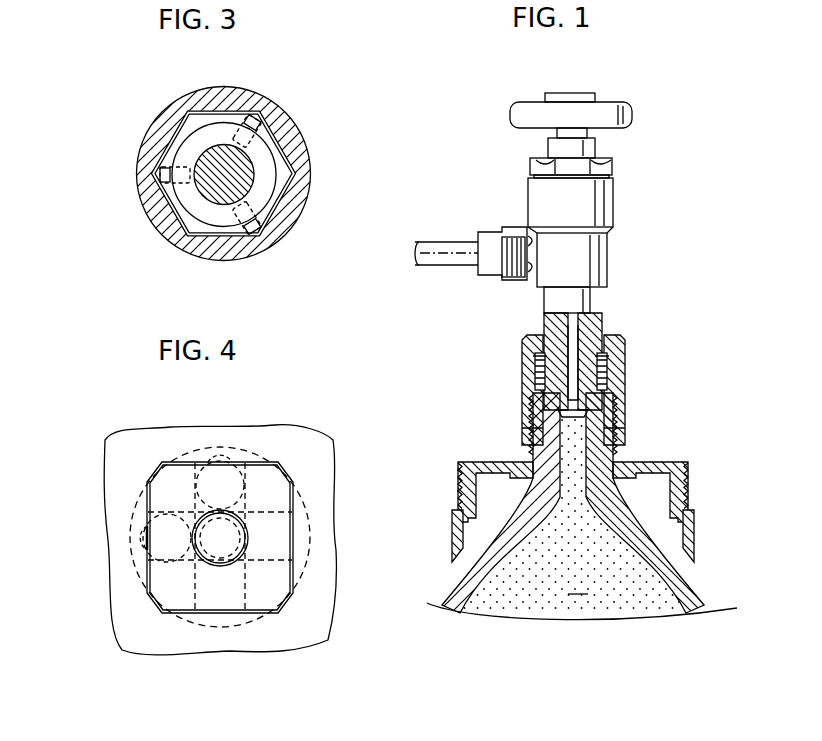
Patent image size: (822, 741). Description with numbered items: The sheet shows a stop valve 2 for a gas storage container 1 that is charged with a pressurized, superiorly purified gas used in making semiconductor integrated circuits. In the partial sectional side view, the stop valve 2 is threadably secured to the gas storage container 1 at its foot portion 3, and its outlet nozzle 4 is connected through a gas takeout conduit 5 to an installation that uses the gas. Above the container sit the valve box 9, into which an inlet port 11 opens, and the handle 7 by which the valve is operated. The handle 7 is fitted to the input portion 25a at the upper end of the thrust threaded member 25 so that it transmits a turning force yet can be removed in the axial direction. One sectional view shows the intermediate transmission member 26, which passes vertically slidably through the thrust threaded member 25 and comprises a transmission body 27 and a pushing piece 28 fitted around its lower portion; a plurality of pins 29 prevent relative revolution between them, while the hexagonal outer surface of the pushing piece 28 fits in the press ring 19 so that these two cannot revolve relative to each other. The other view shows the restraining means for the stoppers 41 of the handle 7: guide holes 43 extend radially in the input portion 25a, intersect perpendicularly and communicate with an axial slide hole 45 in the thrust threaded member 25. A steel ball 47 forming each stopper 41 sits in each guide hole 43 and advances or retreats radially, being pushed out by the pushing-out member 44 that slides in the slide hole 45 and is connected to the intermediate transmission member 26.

In FIG. 1, the gas storage container 1 is at (701, 572).
In FIG. 1, the stop valve 2 is at (616, 187).
In FIG. 1, the foot portion 3 is at (593, 352).
In FIG. 1, the outlet nozzle 4 is at (505, 238).
In FIG. 1, the gas takeout conduit 5 is at (437, 243).
In FIG. 4, the handle 7 is at (120, 463).
In FIG. 1, the handle 7 is at (617, 103).
In FIG. 1, the valve box 9 is at (604, 241).
In FIG. 1, the inlet port 11 is at (573, 323).
In FIG. 3, the press ring 19 is at (163, 118).
In FIG. 3, the intermediate transmission member 26 is at (104, 215).
In FIG. 3, the transmission body 27 is at (187, 200).
In FIG. 3, the pushing piece 28 is at (168, 240).
In FIG. 3, the pins 29 is at (243, 120).
In FIG. 4, the thrust threaded member 25 is at (187, 623).
In FIG. 4, the input portion 25a is at (258, 605).
In FIG. 4, the stoppers 41 is at (143, 530).
In FIG. 4, the guide holes 43 is at (173, 510).
In FIG. 4, the pushing-out member 44 is at (254, 548).
In FIG. 4, the slide hole 45 is at (247, 523).
In FIG. 4, the steel ball 47 is at (220, 460).